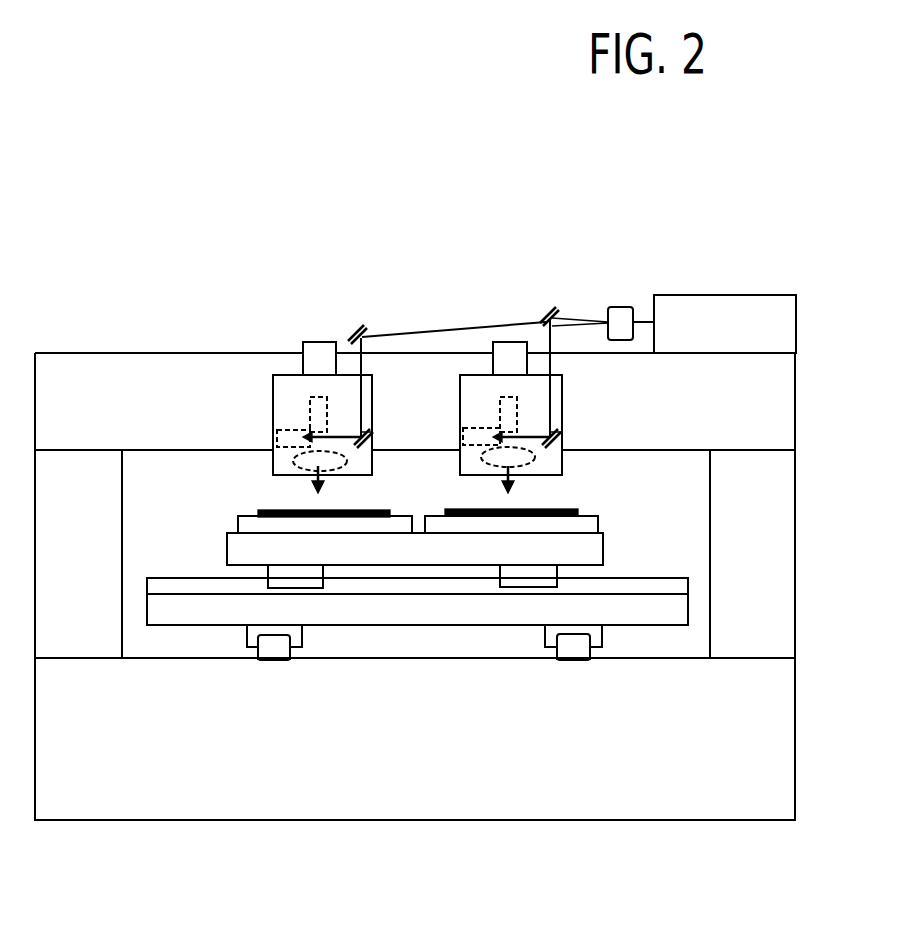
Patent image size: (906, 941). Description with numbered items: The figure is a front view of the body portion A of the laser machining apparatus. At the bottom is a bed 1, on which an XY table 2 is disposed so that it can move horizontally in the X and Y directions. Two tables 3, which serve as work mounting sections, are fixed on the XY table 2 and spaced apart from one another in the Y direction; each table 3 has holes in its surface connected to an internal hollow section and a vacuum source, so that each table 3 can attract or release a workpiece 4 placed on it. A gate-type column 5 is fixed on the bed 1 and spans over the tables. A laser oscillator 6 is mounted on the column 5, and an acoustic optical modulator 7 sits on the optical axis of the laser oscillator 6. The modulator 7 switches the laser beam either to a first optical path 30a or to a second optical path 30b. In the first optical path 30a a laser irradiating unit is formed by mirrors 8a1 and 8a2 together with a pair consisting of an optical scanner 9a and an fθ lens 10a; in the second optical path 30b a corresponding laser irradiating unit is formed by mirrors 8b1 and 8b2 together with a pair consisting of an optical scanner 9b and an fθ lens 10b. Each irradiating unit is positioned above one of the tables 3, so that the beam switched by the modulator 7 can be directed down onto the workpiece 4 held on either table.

The bed 1 is at (90, 813).
The XY table 2 is at (596, 550).
The table 3 is at (242, 525).
The workpiece 4 is at (262, 511).
The gate-type column 5 is at (68, 362).
The laser oscillator 6 is at (717, 296).
The acoustic optical modulator 7 is at (617, 307).
The mirror 8a1 is at (351, 338).
The mirror 8b1 is at (546, 310).
The mirror 8a2 is at (374, 440).
The mirror 8b2 is at (562, 442).
The optical scanner 9a is at (277, 438).
The optical scanner 9b is at (465, 438).
The fθ lens 10a is at (297, 458).
The fθ lens 10b is at (485, 458).
The first optical path 30a is at (457, 327).
The second optical path 30b is at (550, 360).
The body portion A is at (401, 273).